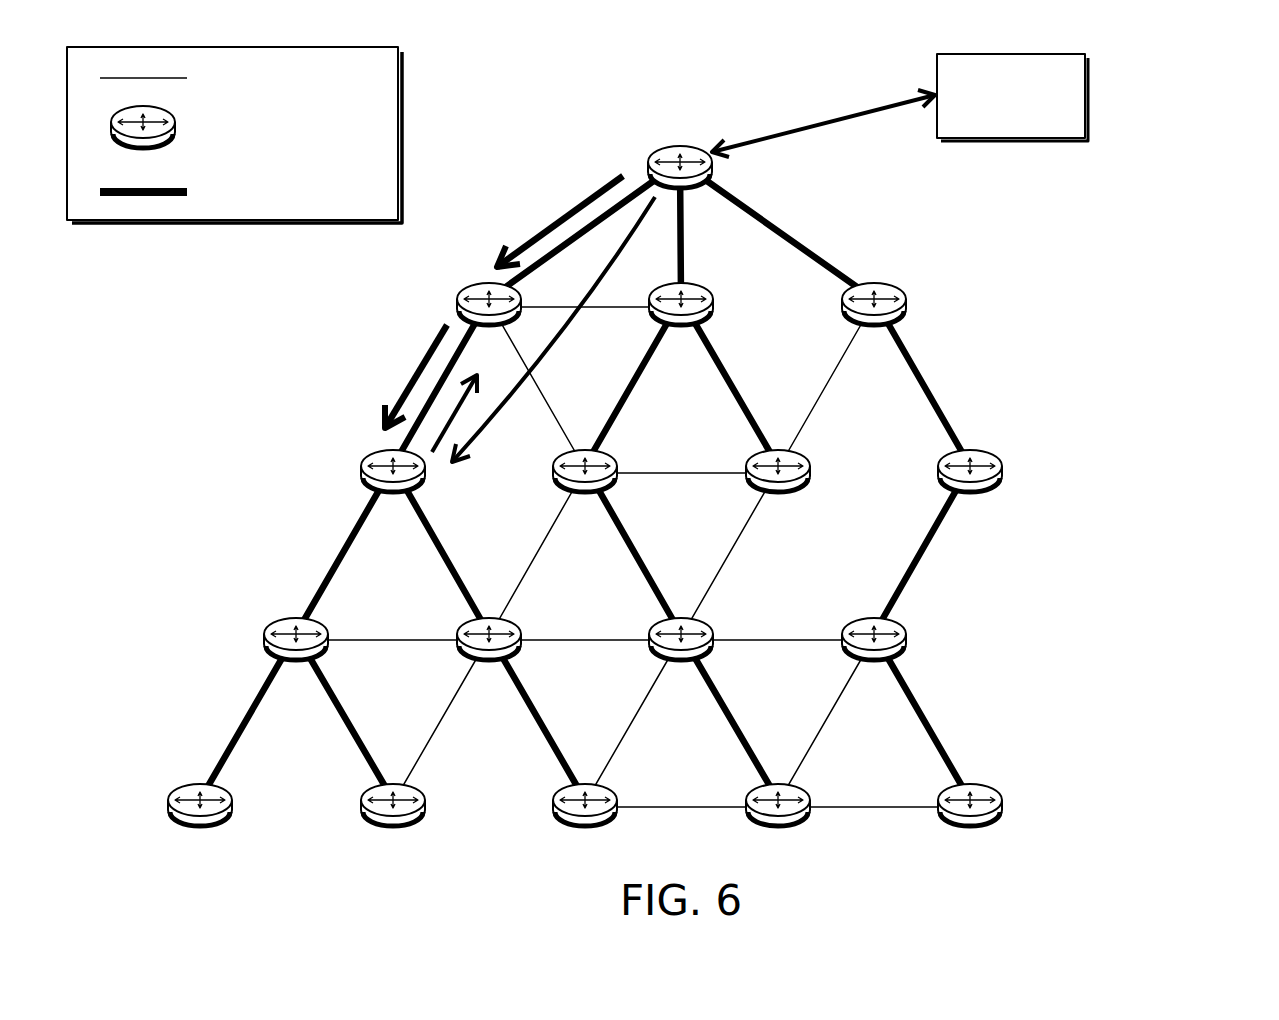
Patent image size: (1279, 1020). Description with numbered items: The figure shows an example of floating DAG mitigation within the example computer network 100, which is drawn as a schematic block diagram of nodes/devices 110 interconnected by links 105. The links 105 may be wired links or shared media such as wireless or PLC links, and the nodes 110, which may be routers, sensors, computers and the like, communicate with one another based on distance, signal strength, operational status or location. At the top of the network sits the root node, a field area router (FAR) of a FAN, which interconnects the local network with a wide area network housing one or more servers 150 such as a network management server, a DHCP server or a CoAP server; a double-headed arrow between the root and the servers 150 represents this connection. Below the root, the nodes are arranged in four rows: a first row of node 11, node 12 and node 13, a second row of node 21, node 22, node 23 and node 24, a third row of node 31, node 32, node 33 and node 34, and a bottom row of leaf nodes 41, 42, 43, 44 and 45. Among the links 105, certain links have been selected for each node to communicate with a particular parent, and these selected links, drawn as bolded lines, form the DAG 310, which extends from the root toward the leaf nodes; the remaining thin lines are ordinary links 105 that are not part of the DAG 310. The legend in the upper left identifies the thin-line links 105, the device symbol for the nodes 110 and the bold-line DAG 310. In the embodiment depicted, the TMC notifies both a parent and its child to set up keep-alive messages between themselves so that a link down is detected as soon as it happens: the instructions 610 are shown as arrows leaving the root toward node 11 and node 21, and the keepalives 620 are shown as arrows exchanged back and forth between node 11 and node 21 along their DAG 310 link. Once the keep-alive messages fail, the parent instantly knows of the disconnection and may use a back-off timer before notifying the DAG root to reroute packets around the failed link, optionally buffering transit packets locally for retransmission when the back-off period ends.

The computer network 100 is at (1188, 108).
The links 105 is at (535, 436).
The nodes/devices 110 is at (229, 127).
The servers 150 is at (993, 120).
The DAG 310 is at (535, 481).
The instructions 610 is at (589, 281).
The keepalives 620 is at (447, 409).
The node 11 is at (489, 323).
The node 12 is at (681, 323).
The node 13 is at (874, 323).
The node 21 is at (393, 490).
The node 22 is at (585, 490).
The node 23 is at (778, 490).
The node 24 is at (970, 490).
The node 31 is at (296, 658).
The node 32 is at (489, 658).
The node 33 is at (681, 658).
The node 34 is at (874, 658).
The node 41 is at (200, 824).
The node 42 is at (393, 824).
The node 43 is at (585, 824).
The node 44 is at (778, 824).
The node 45 is at (970, 824).